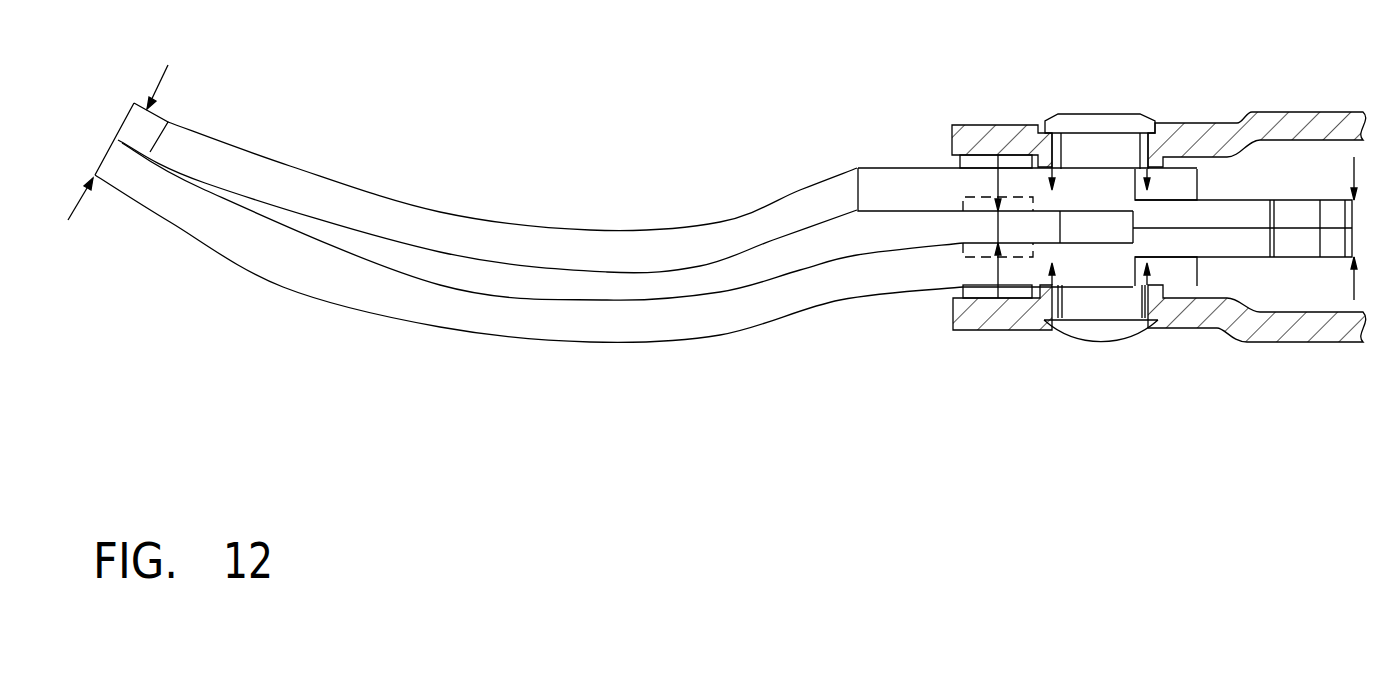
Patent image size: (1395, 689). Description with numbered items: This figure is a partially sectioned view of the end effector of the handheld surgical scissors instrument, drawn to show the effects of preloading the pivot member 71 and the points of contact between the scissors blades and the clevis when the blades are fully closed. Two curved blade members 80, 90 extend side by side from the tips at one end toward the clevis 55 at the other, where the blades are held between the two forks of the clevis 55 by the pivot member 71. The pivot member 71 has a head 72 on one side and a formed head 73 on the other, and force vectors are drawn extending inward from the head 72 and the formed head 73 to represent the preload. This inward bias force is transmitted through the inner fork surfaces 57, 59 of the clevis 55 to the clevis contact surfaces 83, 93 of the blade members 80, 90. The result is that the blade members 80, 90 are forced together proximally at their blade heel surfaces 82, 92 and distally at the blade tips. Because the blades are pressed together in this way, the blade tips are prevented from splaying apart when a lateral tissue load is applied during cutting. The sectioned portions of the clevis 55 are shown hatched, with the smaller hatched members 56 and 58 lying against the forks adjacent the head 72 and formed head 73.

The clevis 55 is at (1197, 123).
The upper clamp flange 56 is at (1020, 123).
The inner fork surface 57 is at (963, 168).
The lower clamp flange 58 is at (1015, 332).
The inner fork surface 59 is at (993, 296).
The pivot member 71 is at (1107, 113).
The head 72 is at (1058, 113).
The formed head 73 is at (1118, 340).
The blade member 80 is at (290, 165).
The blade heel surface 82 is at (1203, 232).
The clevis contact surface 83 is at (968, 160).
The blade member 90 is at (283, 288).
The blade heel surface 92 is at (1150, 228).
The clevis contact surface 93 is at (985, 302).